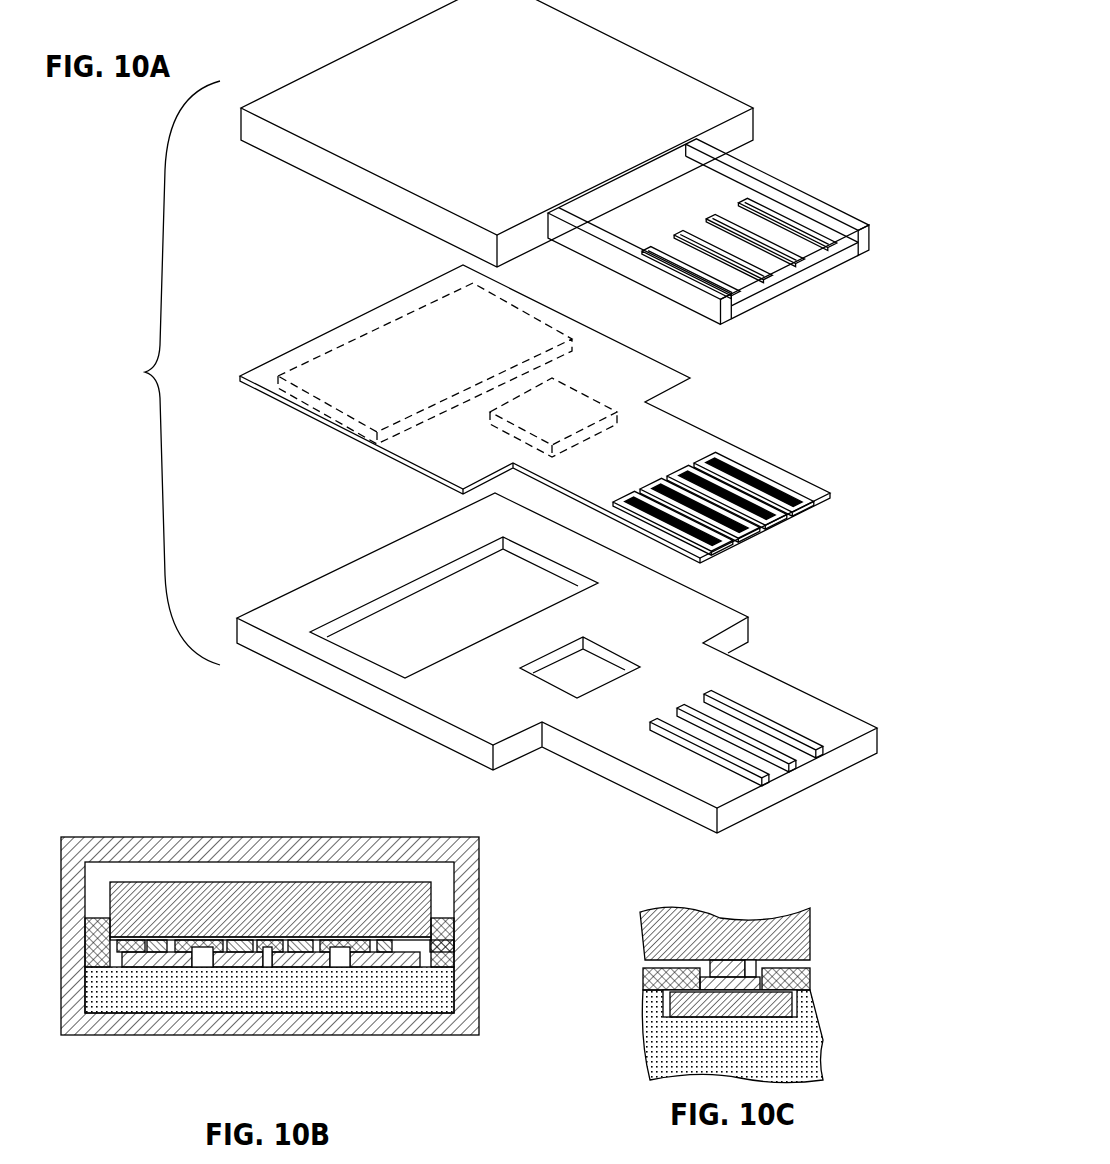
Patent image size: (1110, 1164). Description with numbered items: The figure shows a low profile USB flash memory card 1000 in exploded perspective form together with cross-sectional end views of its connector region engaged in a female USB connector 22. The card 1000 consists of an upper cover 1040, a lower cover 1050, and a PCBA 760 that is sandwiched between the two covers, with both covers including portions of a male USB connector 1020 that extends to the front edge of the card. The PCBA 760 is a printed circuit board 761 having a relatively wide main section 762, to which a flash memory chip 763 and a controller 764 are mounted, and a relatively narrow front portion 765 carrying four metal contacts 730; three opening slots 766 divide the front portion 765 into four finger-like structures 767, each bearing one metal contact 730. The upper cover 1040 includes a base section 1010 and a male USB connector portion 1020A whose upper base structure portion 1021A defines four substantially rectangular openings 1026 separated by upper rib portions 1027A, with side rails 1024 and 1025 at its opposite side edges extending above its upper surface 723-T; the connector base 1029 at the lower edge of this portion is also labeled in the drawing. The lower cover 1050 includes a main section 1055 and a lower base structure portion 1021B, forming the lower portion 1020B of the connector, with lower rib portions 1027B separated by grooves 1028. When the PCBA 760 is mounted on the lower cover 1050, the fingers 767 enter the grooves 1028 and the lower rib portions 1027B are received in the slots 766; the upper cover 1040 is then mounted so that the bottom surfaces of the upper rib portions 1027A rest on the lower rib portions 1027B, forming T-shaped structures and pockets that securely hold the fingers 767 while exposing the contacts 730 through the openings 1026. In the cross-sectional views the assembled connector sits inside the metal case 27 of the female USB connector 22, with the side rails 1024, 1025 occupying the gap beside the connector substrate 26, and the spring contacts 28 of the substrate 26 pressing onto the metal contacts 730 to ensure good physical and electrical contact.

In FIG. 10A, the USB flash memory card 1000 is at (149, 373).
In FIG. 10B, the USB flash memory card 1000 is at (213, 752).
In FIG. 10A, the base section 1010 is at (634, 38).
In FIG. 10B, the male USB connector 1020 is at (125, 733).
In FIG. 10C, the male USB connector 1020 is at (787, 1061).
In FIG. 10A, the male USB connector portion 1020A is at (770, 156).
In FIG. 10B, the male USB connector portion 1020A is at (85, 930).
In FIG. 10A, the lower portion of male USB connector 1020B is at (598, 775).
In FIG. 10B, the lower portion of male USB connector 1020B is at (90, 995).
In FIG. 10A, the upper cover 1040 is at (768, 0).
In FIG. 10A, the lower cover 1050 is at (283, 584).
In FIG. 10A, the main section 1055 is at (642, 623).
In FIG. 10A, the upper base structure portion 1021A is at (716, 206).
In FIG. 10A, the lower base structure portion 1021B is at (752, 682).
In FIG. 10A, the side rail 1024 is at (607, 245).
In FIG. 10B, the side rail 1024 is at (100, 918).
In FIG. 10A, the side rail 1025 is at (745, 215).
In FIG. 10B, the side rail 1025 is at (442, 930).
In FIG. 10A, the openings 1026 is at (688, 262).
In FIG. 10B, the openings 1026 is at (327, 940).
In FIG. 10C, the openings 1026 is at (710, 966).
In FIG. 10A, the upper rib portions 1027A is at (704, 278).
In FIG. 10B, the upper rib portions 1027A is at (150, 952).
In FIG. 10C, the upper rib portions 1027A is at (660, 978).
In FIG. 10A, the lower rib portions 1027B is at (762, 775).
In FIG. 10B, the lower rib portions 1027B is at (240, 952).
In FIG. 10C, the lower rib portions 1027B is at (655, 1000).
In FIG. 10A, the grooves 1028 is at (723, 742).
In FIG. 10B, the grooves 1028 is at (235, 960).
In FIG. 10C, the grooves 1028 is at (680, 1005).
In FIG. 10A, the connector base 1029 is at (805, 278).
In FIG. 10A, the PCBA 760 is at (283, 322).
In FIG. 10A, the printed circuit board 761 is at (360, 309).
In FIG. 10A, the main section 762 is at (464, 448).
In FIG. 10A, the flash memory chip 763 is at (560, 357).
In FIG. 10A, the controller 764 is at (625, 422).
In FIG. 10A, the front portion 765 is at (624, 481).
In FIG. 10A, the metal contacts 730 is at (690, 537).
In FIG. 10B, the metal contacts 730 is at (408, 938).
In FIG. 10C, the metal contacts 730 is at (755, 985).
In FIG. 10A, the opening slots 766 is at (773, 527).
In FIG. 10A, the finger-like structures 767 is at (700, 558).
In FIG. 10B, the finger-like structures 767 is at (200, 960).
In FIG. 10C, the finger-like structures 767 is at (676, 1012).
In FIG. 10B, the connector substrate 26 is at (168, 914).
In FIG. 10C, the connector substrate 26 is at (665, 912).
In FIG. 10B, the female USB connector 22 is at (262, 830).
In FIG. 10B, the metal case 27 is at (297, 830).
In FIG. 10B, the metal spring contacts 28 is at (440, 937).
In FIG. 10C, the metal spring contacts 28 is at (750, 970).
In FIG. 10C, the upper surface 723-T is at (800, 972).